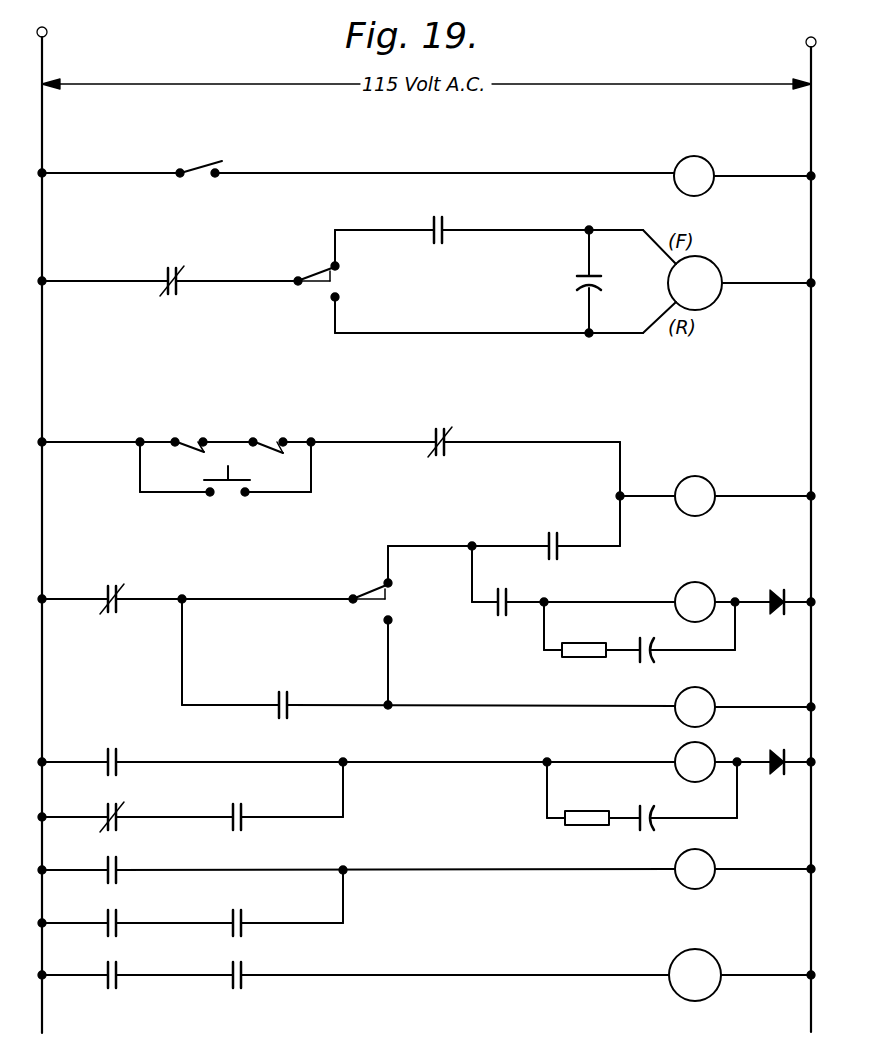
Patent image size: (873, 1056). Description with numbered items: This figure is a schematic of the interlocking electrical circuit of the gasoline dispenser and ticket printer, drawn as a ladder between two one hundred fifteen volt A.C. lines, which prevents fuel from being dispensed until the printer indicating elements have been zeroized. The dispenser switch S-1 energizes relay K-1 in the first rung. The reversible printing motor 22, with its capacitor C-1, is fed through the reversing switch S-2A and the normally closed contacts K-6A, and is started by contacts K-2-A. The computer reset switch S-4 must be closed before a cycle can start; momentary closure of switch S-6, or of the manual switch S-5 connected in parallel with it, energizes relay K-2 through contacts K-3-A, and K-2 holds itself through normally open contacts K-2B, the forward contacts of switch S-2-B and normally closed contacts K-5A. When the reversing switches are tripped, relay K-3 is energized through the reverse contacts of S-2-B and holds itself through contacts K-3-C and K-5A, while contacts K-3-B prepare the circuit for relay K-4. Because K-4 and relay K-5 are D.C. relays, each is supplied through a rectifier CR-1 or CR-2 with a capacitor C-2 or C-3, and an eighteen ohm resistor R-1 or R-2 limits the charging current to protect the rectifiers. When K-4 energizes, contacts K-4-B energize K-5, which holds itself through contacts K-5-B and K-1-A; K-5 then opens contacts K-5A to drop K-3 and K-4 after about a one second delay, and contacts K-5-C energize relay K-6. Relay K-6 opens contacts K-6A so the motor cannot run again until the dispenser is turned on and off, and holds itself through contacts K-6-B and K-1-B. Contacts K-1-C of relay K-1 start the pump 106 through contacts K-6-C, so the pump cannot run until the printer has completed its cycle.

The reversible motor 22 is at (703, 278).
The pump 106 is at (708, 996).
The dispenser switch S-1 is at (173, 148).
The relay K-1 is at (694, 176).
The relay K-2 is at (695, 496).
The relay K-3 is at (695, 707).
The relay K-4 is at (695, 602).
The relay K-5 is at (695, 762).
The relay K-6 is at (695, 869).
The reversing switch S-2-A S-2A is at (303, 284).
The reversing switch S-2-B is at (368, 594).
The invoice rack out switch S-4 is at (187, 431).
The manual actuating switch S-5 is at (227, 498).
The switch S-6 is at (271, 427).
The capacitor C-1 is at (604, 270).
The capacitor C-2 is at (674, 645).
The capacitor C-3 is at (673, 813).
The resistor R-1 is at (584, 649).
The resistor R-2 is at (587, 816).
The rectifier CR-1 is at (772, 589).
The rectifier CR-2 is at (774, 749).
The normally closed contacts K-6-A K-6A is at (171, 297).
The contacts K-2-A is at (469, 223).
The normally open contacts K-2-B K-2B is at (581, 553).
The contacts K-3-A is at (467, 435).
The normally open contacts K-3-B is at (530, 595).
The normally open contacts K-3-C is at (313, 698).
The normally closed contacts K-5-A K-5A is at (134, 592).
The contacts K-4-B is at (140, 755).
The contacts K-1-A is at (136, 811).
The contacts K-5-B is at (265, 810).
The contacts K-5-C is at (141, 863).
The contacts K-6-B is at (140, 916).
The contacts K-1-B is at (265, 915).
The contacts K-1-C is at (141, 968).
The contacts K-6-C is at (265, 966).